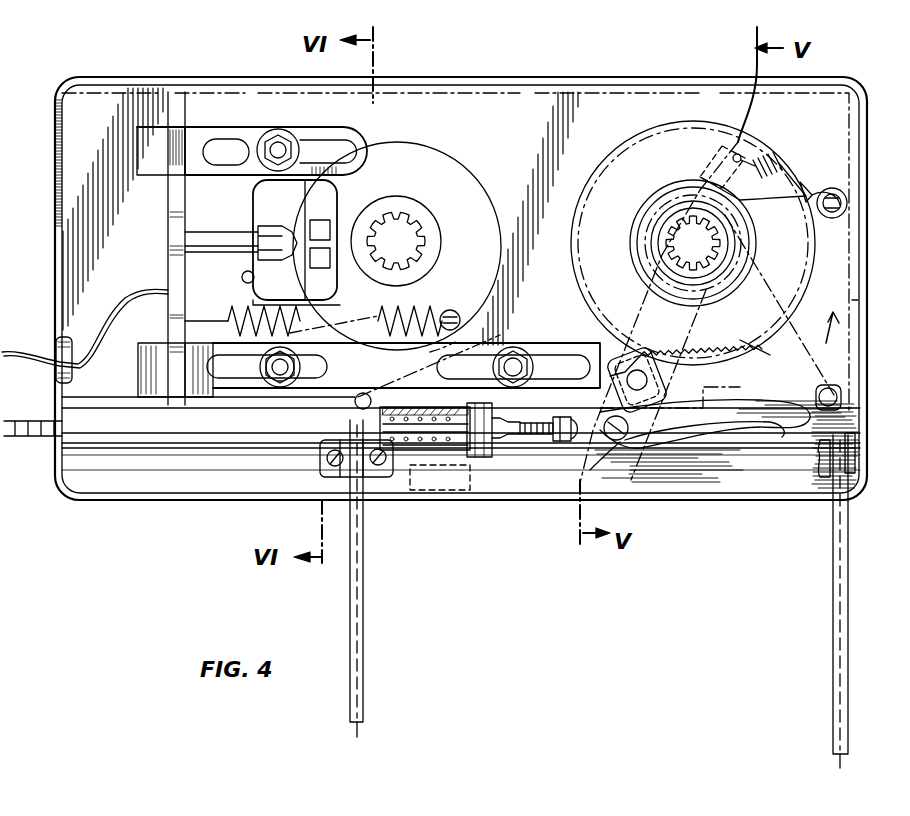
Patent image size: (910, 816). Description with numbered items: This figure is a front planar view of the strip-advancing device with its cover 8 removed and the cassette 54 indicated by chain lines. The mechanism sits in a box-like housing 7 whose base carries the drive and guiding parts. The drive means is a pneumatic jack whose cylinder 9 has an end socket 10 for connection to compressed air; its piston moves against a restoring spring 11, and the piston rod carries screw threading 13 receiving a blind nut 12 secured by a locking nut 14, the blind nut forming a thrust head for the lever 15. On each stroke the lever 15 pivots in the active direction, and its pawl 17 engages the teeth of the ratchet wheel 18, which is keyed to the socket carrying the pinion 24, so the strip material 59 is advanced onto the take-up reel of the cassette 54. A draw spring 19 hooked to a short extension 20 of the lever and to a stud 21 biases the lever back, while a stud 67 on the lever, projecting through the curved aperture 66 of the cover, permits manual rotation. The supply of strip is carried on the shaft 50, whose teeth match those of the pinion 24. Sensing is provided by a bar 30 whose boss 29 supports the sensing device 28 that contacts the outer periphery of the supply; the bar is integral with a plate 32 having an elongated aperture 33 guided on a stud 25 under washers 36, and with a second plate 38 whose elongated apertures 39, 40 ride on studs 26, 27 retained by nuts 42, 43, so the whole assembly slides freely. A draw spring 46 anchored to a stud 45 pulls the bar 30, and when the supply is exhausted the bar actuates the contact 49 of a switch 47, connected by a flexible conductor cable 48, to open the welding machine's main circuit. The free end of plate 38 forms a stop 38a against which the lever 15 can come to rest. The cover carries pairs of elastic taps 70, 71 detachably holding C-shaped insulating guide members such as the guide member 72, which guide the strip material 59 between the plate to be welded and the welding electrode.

The housing 7 is at (858, 258).
The cover 8 is at (800, 475).
The cylinder 9 is at (112, 428).
The end socket 10 is at (38, 442).
The restoring spring 11 is at (452, 450).
The blind nut 12 is at (578, 440).
The screw threading 13 is at (540, 438).
The locking nut 14 is at (495, 407).
The lever 15 is at (640, 450).
The pawl 17 is at (687, 368).
The ratchet wheel 18 is at (740, 342).
The draw spring 19 is at (810, 190).
The short extension 20 is at (712, 169).
The stud 21 is at (848, 204).
The pinion 24 is at (665, 245).
The stud 25 is at (345, 138).
The stud 26 is at (272, 385).
The stud 27 is at (517, 348).
The sensing device 28 is at (260, 240).
The boss 29 is at (170, 230).
The bar 30 is at (172, 140).
The plate 32 is at (192, 125).
The elongated aperture 33 is at (226, 152).
The washers 36 is at (290, 138).
The second plate 38 is at (140, 368).
The stop means 38a is at (622, 352).
The elongated aperture 39 is at (222, 372).
The elongated aperture 40 is at (589, 336).
The nut 42 is at (286, 388).
The nut 43 is at (522, 360).
The stud 45 is at (332, 302).
The draw spring 46 is at (309, 290).
The switch 47 is at (313, 237).
The flexible conductor cable 48 is at (40, 360).
The contact 49 is at (242, 278).
The shaft 50 is at (435, 222).
The cassette 54 is at (852, 301).
The strip material 59 is at (846, 420).
The curved aperture 66 is at (730, 455).
The stud 67 is at (626, 447).
The elastic taps 70 is at (362, 480).
The elastic taps 71 is at (848, 462).
The C-shaped guide member 72 is at (364, 597).